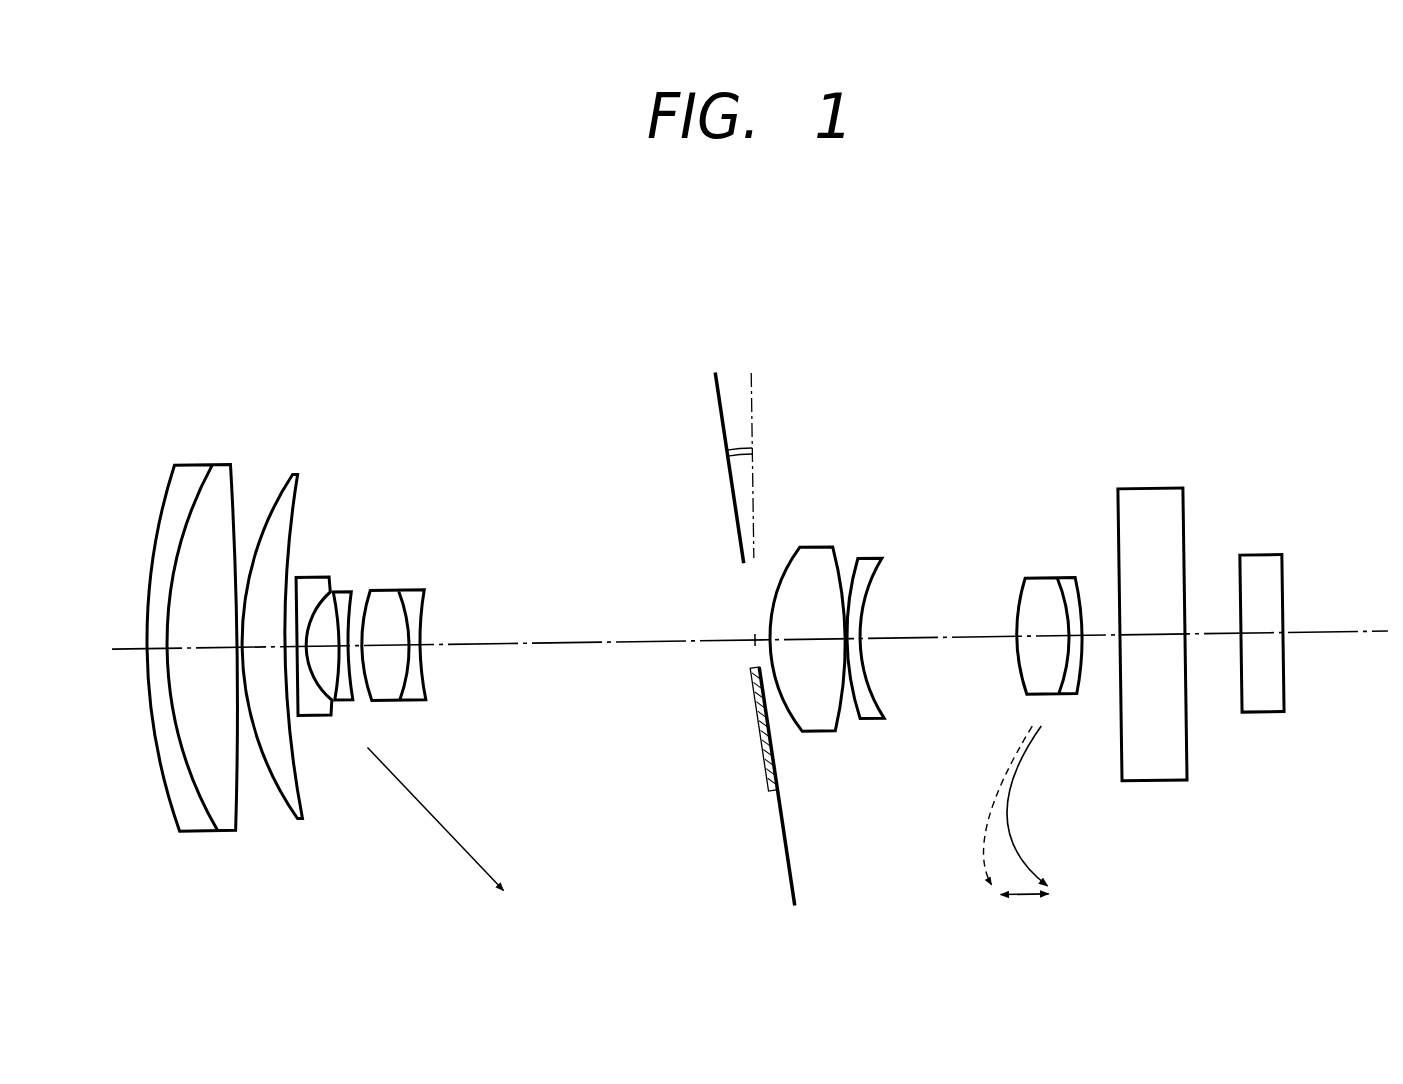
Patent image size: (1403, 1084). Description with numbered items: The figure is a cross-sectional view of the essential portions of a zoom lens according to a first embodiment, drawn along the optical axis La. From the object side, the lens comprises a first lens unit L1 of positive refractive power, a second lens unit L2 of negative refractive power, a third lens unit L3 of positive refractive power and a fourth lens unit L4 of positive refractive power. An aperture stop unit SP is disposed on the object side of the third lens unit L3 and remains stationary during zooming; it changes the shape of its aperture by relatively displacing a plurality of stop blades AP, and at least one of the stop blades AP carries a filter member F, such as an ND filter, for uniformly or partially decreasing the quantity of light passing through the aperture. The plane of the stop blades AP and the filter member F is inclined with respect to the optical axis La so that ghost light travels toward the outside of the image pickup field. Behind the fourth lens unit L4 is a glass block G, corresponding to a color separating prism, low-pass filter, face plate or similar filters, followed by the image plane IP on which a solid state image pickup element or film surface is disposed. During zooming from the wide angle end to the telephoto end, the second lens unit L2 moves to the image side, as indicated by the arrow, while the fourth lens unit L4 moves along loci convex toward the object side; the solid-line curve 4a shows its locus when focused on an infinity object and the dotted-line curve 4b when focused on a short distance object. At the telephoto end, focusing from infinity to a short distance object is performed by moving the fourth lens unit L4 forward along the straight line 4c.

The first lens unit L1 is at (154, 453).
The second lens unit L2 is at (295, 564).
The third lens unit L3 is at (777, 540).
The fourth lens unit L4 is at (1016, 565).
The aperture stop unit SP is at (724, 383).
The optical axis La is at (560, 640).
The filter member F is at (756, 730).
The stop blades AP is at (783, 825).
The glass block G is at (1154, 495).
The image plane IP is at (1264, 562).
The solid-line curve 4a is at (1006, 816).
The dotted-line curve 4b is at (987, 809).
The straight line 4c is at (1025, 915).